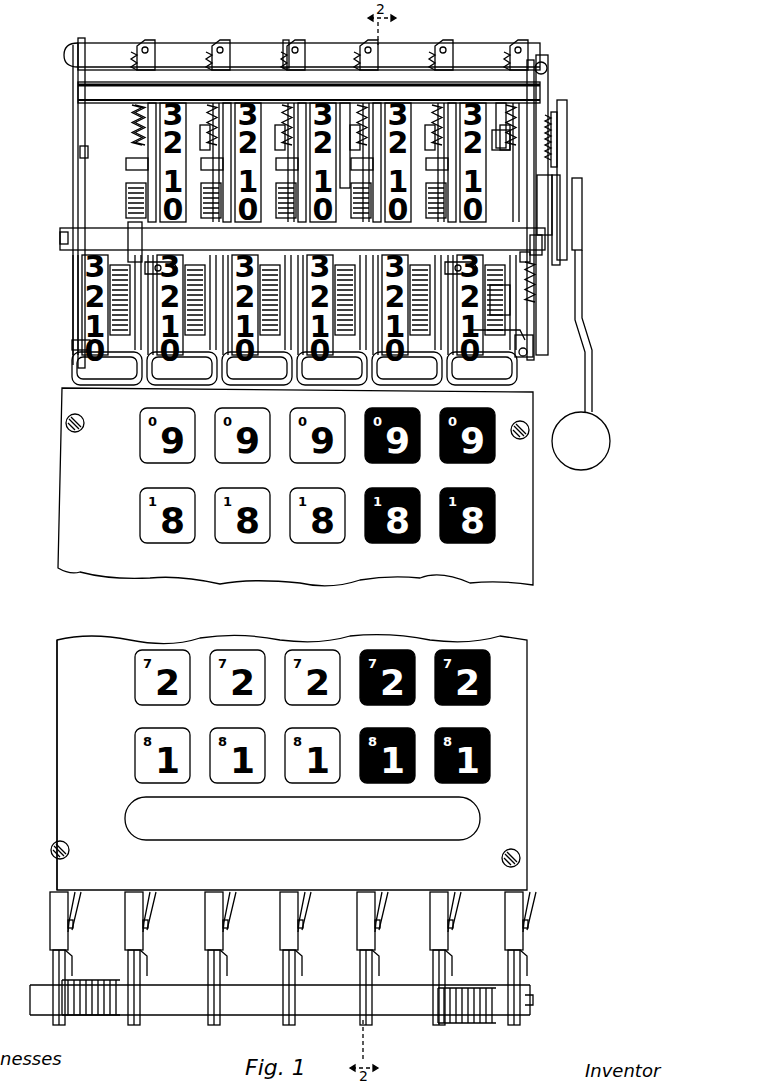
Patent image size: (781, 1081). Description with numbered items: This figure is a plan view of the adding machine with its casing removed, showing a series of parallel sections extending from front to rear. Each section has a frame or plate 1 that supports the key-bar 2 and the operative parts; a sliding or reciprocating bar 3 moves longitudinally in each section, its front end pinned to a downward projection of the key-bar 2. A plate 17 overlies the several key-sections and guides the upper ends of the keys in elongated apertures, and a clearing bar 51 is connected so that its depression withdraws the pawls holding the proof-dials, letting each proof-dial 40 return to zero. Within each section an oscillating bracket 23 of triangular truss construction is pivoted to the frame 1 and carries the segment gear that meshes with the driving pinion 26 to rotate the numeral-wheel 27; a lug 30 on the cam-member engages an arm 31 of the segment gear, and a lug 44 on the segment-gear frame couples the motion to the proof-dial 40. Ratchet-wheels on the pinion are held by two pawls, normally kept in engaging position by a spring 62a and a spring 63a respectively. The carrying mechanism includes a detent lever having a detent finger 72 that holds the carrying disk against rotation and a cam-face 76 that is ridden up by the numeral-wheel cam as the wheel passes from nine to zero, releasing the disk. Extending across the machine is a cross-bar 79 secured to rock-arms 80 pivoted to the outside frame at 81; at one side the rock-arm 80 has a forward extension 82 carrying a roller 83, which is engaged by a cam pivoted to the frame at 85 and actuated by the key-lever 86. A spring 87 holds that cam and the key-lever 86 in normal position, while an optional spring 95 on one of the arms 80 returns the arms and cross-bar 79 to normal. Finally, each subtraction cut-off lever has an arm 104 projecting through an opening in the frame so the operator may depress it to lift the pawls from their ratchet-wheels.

The frame or plate 1 is at (233, 52).
The key-bar 2 is at (522, 910).
The sliding or reciprocating bar 3 is at (430, 905).
The plate 17 is at (76, 765).
The oscillating bracket 23 is at (515, 330).
The driving pinion 26 is at (512, 300).
The numeral-wheel 27 is at (535, 346).
The lug 30 is at (416, 145).
The arm 31 is at (501, 132).
The proof-dial 40 is at (162, 170).
The lug 44 is at (345, 182).
The clearing bar 51 is at (302, 818).
The spring 62a is at (287, 62).
The spring 63a is at (535, 190).
The detent finger 72 is at (78, 340).
The cam-face 76 is at (76, 348).
The cross-bar 79 is at (181, 75).
The rock-arms 80 is at (82, 48).
The pivot 81 is at (78, 152).
The forward extension 82 is at (583, 192).
The roller 83 is at (552, 210).
The pivot 85 is at (561, 218).
The key-lever 86 is at (584, 276).
The spring 87 is at (538, 272).
The spring 95 is at (556, 135).
The arm 104 is at (133, 248).